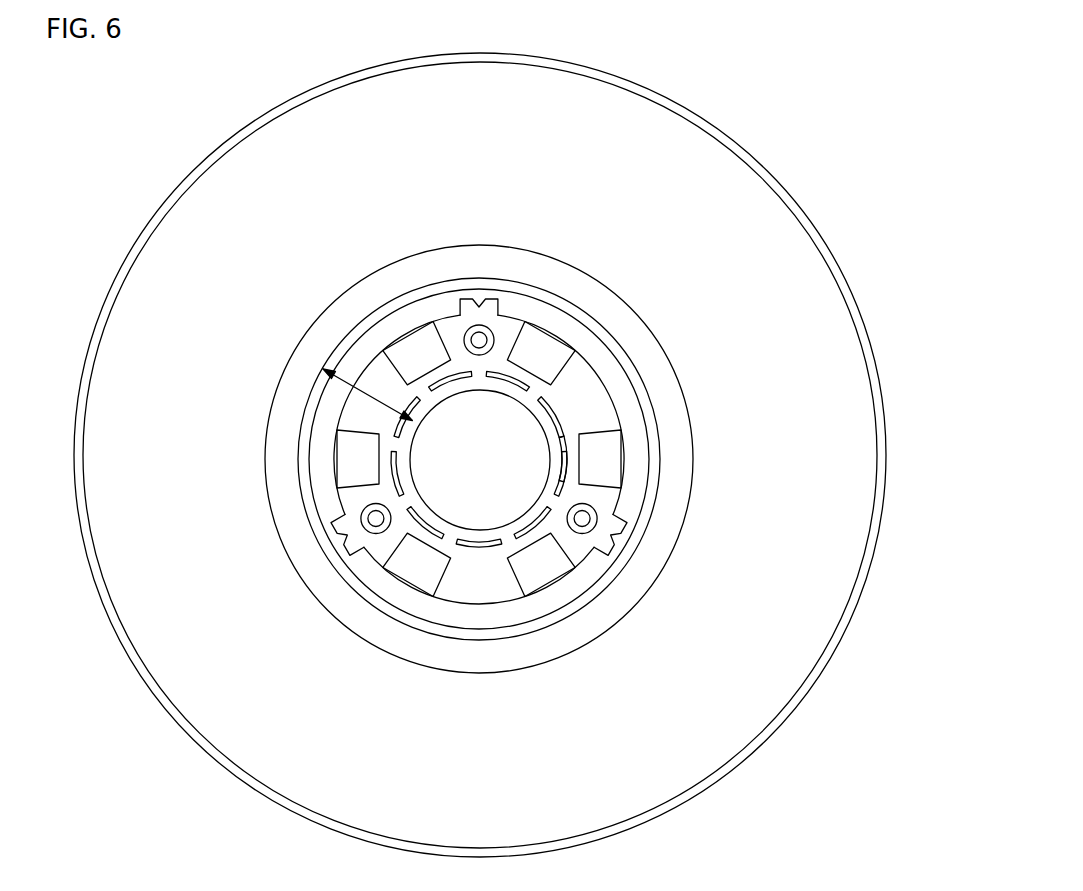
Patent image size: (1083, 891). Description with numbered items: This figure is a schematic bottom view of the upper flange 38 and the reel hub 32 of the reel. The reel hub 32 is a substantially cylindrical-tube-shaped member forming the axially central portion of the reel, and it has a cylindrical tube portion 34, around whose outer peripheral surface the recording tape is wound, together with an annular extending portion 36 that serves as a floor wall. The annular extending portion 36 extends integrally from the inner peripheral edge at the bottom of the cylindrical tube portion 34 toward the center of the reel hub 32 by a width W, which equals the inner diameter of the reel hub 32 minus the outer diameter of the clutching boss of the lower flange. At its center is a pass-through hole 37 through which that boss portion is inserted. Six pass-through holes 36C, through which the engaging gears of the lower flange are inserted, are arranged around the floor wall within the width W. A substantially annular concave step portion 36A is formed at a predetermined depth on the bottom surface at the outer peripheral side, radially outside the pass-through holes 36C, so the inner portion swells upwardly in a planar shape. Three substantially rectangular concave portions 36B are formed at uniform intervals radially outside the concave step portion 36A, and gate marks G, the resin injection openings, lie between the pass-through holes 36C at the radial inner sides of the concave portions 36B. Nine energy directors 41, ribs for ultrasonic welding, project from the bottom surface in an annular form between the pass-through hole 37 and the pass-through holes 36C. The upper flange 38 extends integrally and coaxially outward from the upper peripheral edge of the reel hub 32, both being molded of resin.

The upper flange 38 is at (703, 173).
The reel hub 32 is at (630, 199).
The cylindrical tube portion 34 is at (575, 265).
The annular extending portion 36 is at (509, 328).
The concave step portion 36A is at (611, 376).
The concave portions 36B is at (481, 325).
The pass-through holes 36C is at (411, 336).
The pass-through hole 37 is at (418, 439).
The energy directors 41 is at (480, 549).
The width W is at (340, 379).
The gate marks G is at (584, 519).